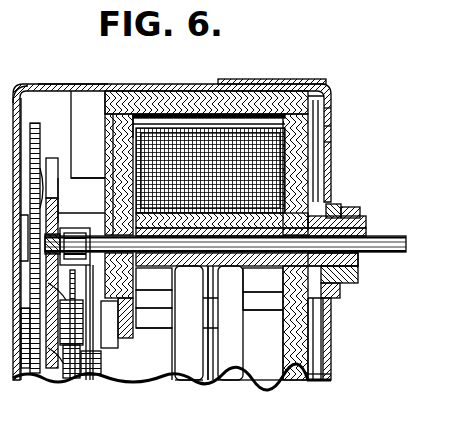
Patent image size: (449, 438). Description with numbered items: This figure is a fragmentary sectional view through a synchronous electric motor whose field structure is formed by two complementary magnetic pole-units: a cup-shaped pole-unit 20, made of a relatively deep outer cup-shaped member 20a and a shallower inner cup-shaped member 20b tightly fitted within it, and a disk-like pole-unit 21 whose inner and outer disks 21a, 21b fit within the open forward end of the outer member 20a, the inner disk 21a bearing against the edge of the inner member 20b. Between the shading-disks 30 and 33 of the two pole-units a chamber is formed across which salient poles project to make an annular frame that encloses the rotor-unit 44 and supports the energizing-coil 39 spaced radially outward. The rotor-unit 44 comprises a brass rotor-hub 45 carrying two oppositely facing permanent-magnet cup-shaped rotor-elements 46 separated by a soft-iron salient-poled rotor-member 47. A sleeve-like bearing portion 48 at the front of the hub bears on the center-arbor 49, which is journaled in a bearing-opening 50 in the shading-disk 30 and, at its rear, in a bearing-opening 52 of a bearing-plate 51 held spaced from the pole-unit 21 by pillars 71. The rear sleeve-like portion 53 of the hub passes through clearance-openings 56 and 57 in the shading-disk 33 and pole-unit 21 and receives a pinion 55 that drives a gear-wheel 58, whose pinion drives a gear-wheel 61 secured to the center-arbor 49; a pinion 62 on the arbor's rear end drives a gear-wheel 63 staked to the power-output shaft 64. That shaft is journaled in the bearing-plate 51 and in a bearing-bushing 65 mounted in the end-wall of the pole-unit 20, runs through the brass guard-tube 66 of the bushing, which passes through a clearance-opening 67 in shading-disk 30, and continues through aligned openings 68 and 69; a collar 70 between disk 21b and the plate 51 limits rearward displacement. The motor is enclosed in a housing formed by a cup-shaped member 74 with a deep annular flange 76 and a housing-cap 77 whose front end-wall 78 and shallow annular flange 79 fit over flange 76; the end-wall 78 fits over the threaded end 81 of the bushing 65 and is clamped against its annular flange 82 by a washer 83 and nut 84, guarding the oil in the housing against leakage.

The cup-shaped pole-unit 20 is at (324, 98).
The outer cup-shaped member 20a is at (324, 117).
The inner cup-shaped member 20b is at (324, 133).
The disk-like pole-unit 21 is at (110, 96).
The inner disk 21a is at (125, 112).
The outer disk 21b is at (99, 100).
The shading-disk 30 is at (290, 98).
The shading-disk 33 is at (140, 116).
The energizing-coil 39 is at (202, 130).
The rotor-unit 44 is at (240, 372).
The rotor-hub 45 is at (245, 372).
The cup-shaped rotor-elements 46 is at (172, 370).
The salient-poled rotor-member 47 is at (201, 374).
The sleeve-like bearing portion 48 is at (262, 374).
The center-arbor 49 is at (50, 373).
The bearing-opening 50 is at (283, 372).
The bearing-plate 51 is at (53, 148).
The bearing-opening 52 is at (38, 372).
The sleeve-like portion 53 is at (146, 372).
The pinion 55 is at (90, 372).
The clearance-opening 56 is at (154, 318).
The clearance-opening 57 is at (154, 300).
The gear-wheel 58 is at (100, 318).
The gear-wheel 61 is at (66, 372).
The pinion 62 is at (20, 370).
The gear-wheel 63 is at (26, 115).
The power-output shaft 64 is at (386, 248).
The bearing-bushing 65 is at (336, 281).
The guard-tube 66 is at (270, 260).
The clearance-opening 67 is at (263, 306).
The opening 68 is at (154, 280).
The opening 69 is at (94, 220).
The collar 70 is at (70, 220).
The pillars 71 is at (88, 171).
The cup-shaped housing member 74 is at (22, 76).
The annular flange 76 is at (58, 76).
The housing-cap 77 is at (320, 79).
The front end-wall 78 is at (325, 366).
The annular flange 79 is at (262, 60).
The externally threaded forward end 81 is at (358, 224).
The annular flange 82 is at (323, 197).
The washer 83 is at (343, 210).
The nut 84 is at (352, 204).